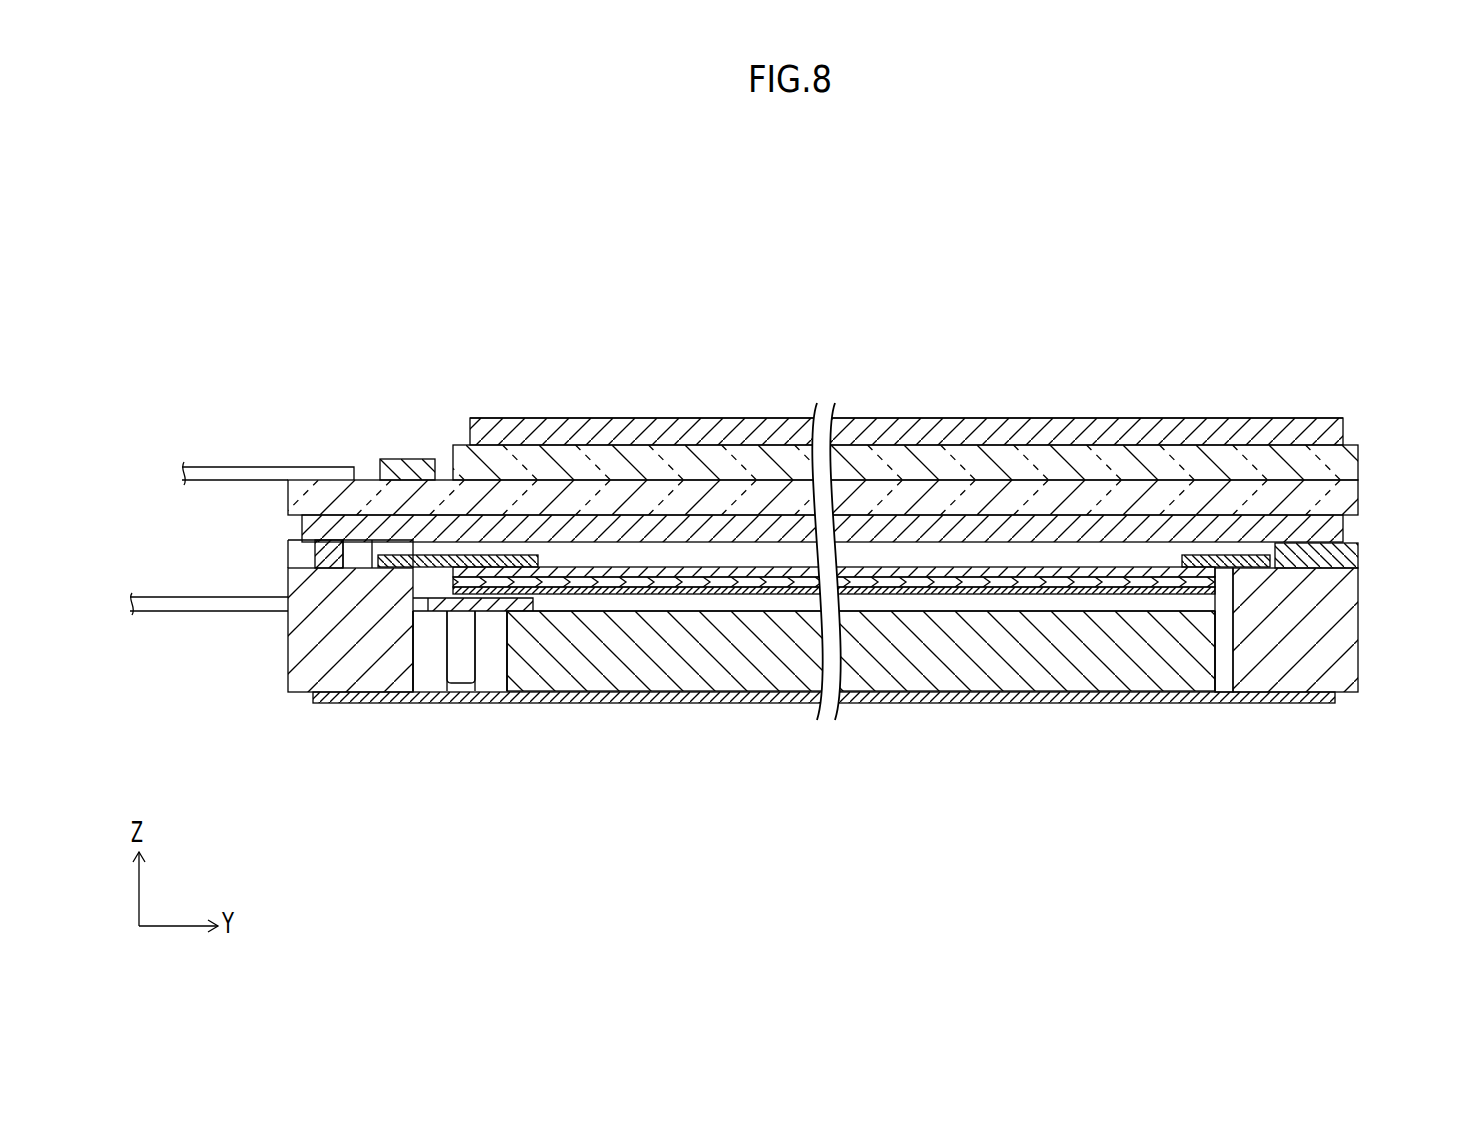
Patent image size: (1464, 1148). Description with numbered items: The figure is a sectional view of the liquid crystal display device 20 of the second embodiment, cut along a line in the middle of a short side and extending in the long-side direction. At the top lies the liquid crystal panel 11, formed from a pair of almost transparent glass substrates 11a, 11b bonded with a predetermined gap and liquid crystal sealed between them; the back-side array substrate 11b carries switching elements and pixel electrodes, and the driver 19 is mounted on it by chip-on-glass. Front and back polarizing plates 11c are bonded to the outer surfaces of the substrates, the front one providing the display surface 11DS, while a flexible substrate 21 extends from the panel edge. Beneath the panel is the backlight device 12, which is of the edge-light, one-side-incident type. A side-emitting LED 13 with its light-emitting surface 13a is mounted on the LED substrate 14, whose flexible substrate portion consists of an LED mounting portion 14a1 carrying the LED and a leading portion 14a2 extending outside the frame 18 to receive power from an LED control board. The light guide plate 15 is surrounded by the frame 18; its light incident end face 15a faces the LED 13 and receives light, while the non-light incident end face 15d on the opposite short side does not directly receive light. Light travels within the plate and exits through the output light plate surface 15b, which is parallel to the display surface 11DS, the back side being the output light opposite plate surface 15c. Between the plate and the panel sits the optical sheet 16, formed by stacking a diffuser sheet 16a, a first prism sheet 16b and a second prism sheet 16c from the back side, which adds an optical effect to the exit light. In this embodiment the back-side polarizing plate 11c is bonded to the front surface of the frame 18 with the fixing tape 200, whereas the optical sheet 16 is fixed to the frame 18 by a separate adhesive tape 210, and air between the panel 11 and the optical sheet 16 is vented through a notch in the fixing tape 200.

The liquid crystal display device 20 is at (781, 577).
The liquid crystal panel 11 is at (823, 424).
The glass substrate 11a is at (538, 462).
The array substrate 11b is at (587, 497).
The polarizing plate 11c is at (728, 527).
The display surface 11DS is at (950, 417).
The backlight device 12 is at (781, 700).
The LED 13 is at (456, 661).
The light-emitting surface 13a is at (476, 649).
The LED substrate 14 is at (668, 653).
The LED mounting portion 14a1 is at (415, 668).
The leading portion 14a2 is at (148, 608).
The light guide plate 15 is at (824, 686).
The light incident end face 15a is at (507, 648).
The output light plate surface 15b is at (718, 614).
The output light opposite plate surface 15c is at (655, 692).
The non-light incident end face 15d is at (1216, 628).
The optical sheet 16 is at (956, 611).
The diffuser sheet 16a is at (1214, 588).
The first prism sheet 16b is at (1214, 579).
The second prism sheet 16c is at (1214, 571).
The frame 18 is at (308, 644).
The driver 19 is at (408, 467).
The flexible printed circuit board 21 is at (277, 473).
The fixing tape 200 is at (333, 547).
The adhesive tape 210 is at (448, 553).